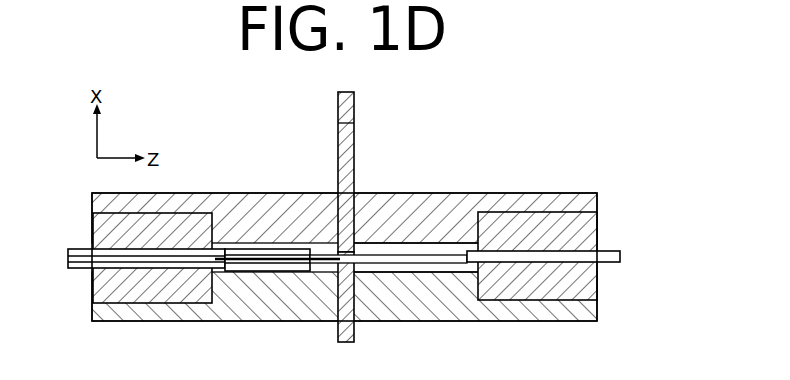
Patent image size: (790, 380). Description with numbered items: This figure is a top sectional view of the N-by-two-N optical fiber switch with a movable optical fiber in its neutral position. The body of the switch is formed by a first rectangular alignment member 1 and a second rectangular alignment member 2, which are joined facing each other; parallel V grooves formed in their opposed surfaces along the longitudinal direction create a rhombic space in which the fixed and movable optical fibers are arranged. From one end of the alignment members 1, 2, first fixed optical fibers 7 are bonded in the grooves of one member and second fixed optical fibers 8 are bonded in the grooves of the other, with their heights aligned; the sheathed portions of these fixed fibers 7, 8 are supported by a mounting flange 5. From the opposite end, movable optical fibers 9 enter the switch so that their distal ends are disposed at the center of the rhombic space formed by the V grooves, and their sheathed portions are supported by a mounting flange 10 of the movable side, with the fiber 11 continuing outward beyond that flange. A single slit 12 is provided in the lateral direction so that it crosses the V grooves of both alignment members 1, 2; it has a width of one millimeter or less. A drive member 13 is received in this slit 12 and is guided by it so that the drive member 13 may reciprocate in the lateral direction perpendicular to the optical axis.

The first rectangular alignment member 1 is at (511, 202).
The second rectangular alignment member 2 is at (430, 300).
The mounting flange 5 is at (98, 288).
The first fixed optical fiber 7 is at (250, 243).
The second fixed optical fiber 8 is at (273, 266).
The movable optical fiber 9 is at (413, 243).
The mounting flange of the movable side 10 is at (598, 221).
The output optical fiber 11 is at (613, 262).
The slit 12 is at (355, 343).
The drive member 13 is at (350, 152).